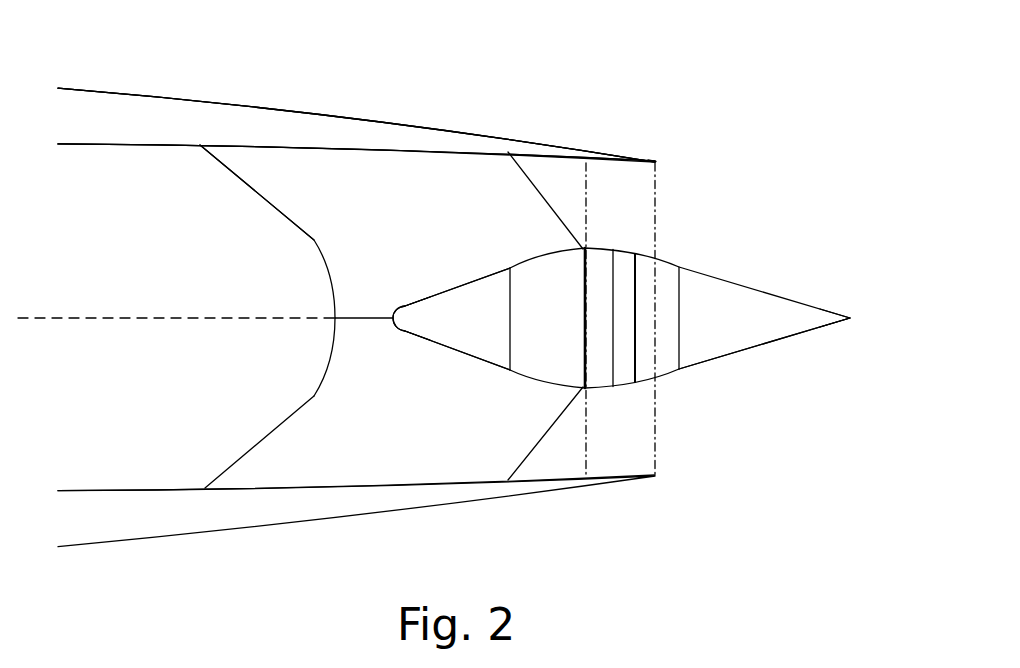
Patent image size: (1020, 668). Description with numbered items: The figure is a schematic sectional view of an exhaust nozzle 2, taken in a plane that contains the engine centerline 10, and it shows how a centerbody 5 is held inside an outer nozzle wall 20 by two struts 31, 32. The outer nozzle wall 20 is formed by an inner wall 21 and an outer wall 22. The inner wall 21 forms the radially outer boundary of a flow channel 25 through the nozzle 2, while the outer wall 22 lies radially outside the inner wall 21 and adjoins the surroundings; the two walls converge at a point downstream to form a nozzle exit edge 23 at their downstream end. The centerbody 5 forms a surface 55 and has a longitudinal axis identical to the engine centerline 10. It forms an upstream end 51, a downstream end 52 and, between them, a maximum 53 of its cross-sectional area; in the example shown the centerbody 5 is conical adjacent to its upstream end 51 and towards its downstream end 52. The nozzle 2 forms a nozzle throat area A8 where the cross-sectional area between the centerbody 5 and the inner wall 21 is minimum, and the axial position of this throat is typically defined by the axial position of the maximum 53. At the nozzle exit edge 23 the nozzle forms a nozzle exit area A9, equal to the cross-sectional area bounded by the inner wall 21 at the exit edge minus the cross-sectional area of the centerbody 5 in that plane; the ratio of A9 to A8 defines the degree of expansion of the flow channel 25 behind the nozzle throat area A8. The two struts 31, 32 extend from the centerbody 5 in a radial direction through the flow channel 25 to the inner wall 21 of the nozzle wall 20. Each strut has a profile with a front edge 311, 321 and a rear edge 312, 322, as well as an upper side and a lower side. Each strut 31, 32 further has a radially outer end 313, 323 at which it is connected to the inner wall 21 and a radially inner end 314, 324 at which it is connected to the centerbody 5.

The nozzle 2 is at (481, 99).
The centerbody 5 is at (750, 303).
The engine centerline 10 is at (78, 318).
The outer nozzle wall 20 is at (236, 101).
The inner wall 21 is at (115, 145).
The outer wall 22 is at (125, 95).
The nozzle exit edge 23 is at (655, 161).
The flow channel 25 is at (73, 260).
The strut 31 is at (282, 210).
The strut 32 is at (288, 420).
The upstream end 51 is at (393, 324).
The downstream end 52 is at (853, 318).
The maximum 53 is at (587, 248).
The surface 55 is at (720, 362).
The front edge 311 is at (243, 182).
The rear edge 312 is at (546, 208).
The radially outer end 313 is at (386, 148).
The radially inner end 314 is at (485, 278).
The front edge 321 is at (250, 452).
The rear edge 322 is at (547, 428).
The radially outer end 323 is at (378, 488).
The radially inner end 324 is at (449, 343).
The nozzle throat area A8 is at (587, 192).
The nozzle exit area A9 is at (656, 218).